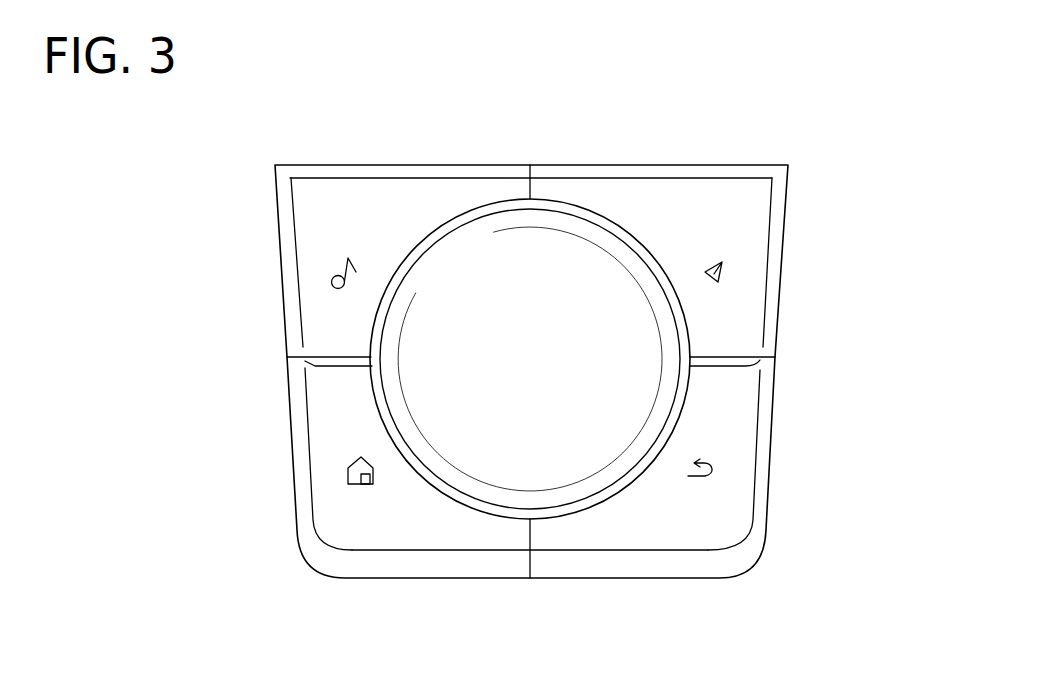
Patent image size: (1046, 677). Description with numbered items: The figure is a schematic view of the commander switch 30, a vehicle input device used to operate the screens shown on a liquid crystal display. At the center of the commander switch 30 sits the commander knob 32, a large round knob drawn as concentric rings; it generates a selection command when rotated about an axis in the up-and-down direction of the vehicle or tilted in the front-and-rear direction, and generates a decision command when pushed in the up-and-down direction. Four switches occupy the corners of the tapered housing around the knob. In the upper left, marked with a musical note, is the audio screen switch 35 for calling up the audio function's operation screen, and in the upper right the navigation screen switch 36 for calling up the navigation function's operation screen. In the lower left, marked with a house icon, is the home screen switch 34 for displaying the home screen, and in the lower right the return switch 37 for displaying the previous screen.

The commander switch 30 is at (275, 131).
The commander knob 32 is at (683, 343).
The home screen switch 34 is at (292, 457).
The audio screen switch 35 is at (278, 228).
The navigation screen switch 36 is at (787, 217).
The return switch 37 is at (770, 455).